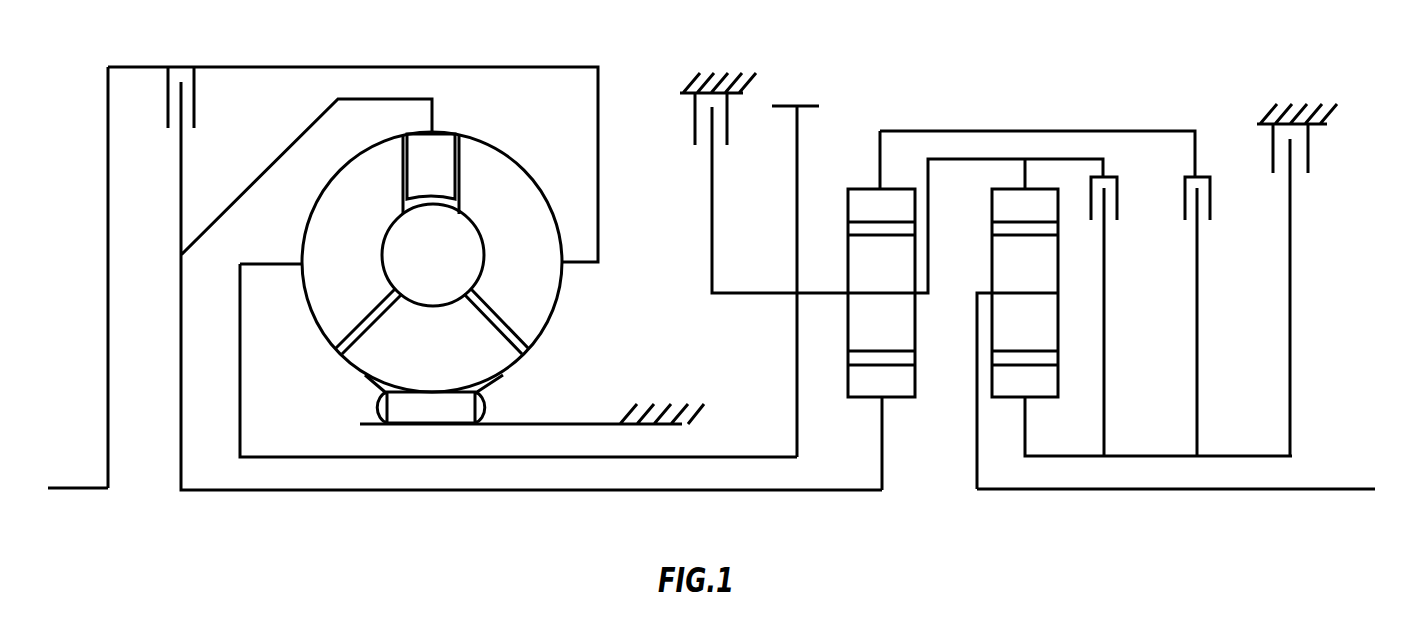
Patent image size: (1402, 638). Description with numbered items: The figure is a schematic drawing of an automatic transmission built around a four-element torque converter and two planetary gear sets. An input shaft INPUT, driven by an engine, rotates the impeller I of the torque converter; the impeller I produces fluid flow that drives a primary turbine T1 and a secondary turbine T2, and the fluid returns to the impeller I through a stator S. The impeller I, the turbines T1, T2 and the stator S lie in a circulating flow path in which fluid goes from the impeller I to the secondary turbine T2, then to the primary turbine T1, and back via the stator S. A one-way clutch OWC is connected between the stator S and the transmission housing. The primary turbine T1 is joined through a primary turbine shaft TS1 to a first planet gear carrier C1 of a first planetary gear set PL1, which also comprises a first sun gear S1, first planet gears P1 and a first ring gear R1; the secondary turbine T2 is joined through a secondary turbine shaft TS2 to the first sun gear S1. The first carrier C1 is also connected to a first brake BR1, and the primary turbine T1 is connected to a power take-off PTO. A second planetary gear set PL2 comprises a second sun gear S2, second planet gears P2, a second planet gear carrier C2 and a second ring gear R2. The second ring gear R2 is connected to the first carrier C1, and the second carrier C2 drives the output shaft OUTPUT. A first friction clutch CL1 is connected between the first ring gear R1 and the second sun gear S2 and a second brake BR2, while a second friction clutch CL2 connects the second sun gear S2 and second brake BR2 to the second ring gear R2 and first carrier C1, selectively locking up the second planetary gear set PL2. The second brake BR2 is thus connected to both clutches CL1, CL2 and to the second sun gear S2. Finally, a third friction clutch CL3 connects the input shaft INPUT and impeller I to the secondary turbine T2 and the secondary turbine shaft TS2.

The input shaft INPUT is at (80, 505).
The output shaft OUTPUT is at (1176, 506).
The third friction clutch CL3 is at (206, 97).
The second friction clutch CL2 is at (1123, 316).
The first friction clutch CL1 is at (1216, 316).
The first brake BR1 is at (743, 183).
The second brake BR2 is at (1312, 280).
The power take-off PTO is at (795, 266).
The primary turbine T1 is at (365, 297).
The secondary turbine T2 is at (431, 174).
The impeller I is at (497, 297).
The stator S is at (434, 365).
The one-way clutch OWC is at (431, 407).
The primary turbine shaft TS1 is at (311, 452).
The secondary turbine shaft TS2 is at (339, 492).
The first ring gear R1 is at (881, 208).
The first planet gears P1 is at (881, 255).
The first sun gear S1 is at (881, 430).
The second ring gear R2 is at (1025, 208).
The second planet gears P2 is at (1025, 255).
The second sun gear S2 is at (1151, 413).
The first planet gear carrier C1 is at (952, 241).
The second planet gear carrier C2 is at (963, 391).
The first planetary gear set PL1 is at (905, 449).
The second planetary gear set PL2 is at (997, 452).